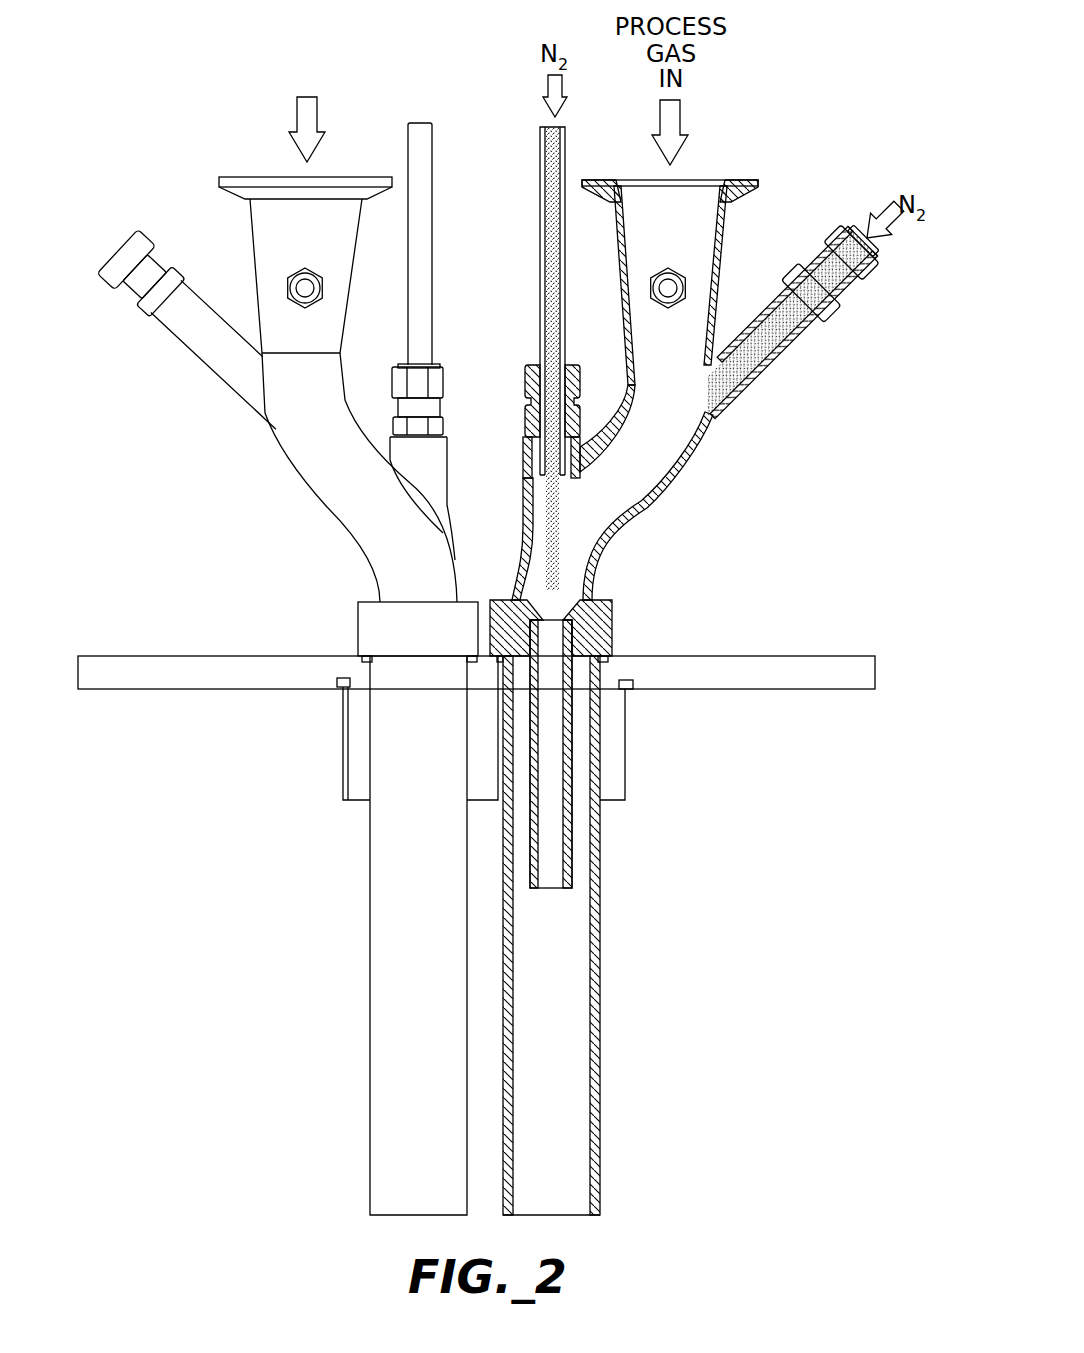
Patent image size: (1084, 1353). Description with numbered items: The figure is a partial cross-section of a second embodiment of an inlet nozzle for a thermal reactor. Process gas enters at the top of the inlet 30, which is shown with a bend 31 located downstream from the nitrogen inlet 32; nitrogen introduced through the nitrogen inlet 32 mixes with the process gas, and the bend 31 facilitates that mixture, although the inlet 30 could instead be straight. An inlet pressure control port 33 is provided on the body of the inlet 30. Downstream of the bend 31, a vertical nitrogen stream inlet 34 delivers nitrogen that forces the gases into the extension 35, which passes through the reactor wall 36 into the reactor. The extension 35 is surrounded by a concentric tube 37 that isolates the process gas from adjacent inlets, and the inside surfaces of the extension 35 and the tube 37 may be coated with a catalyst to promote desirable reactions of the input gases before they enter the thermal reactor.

The inlet 30 is at (653, 192).
The bend 31 is at (663, 492).
The nitrogen inlet 32 is at (828, 317).
The inlet pressure control port 33 is at (687, 283).
The vertical nitrogen stream inlet 34 is at (540, 312).
The extension 35 is at (572, 847).
The reactor wall 36 is at (713, 656).
The concentric tube 37 is at (600, 957).